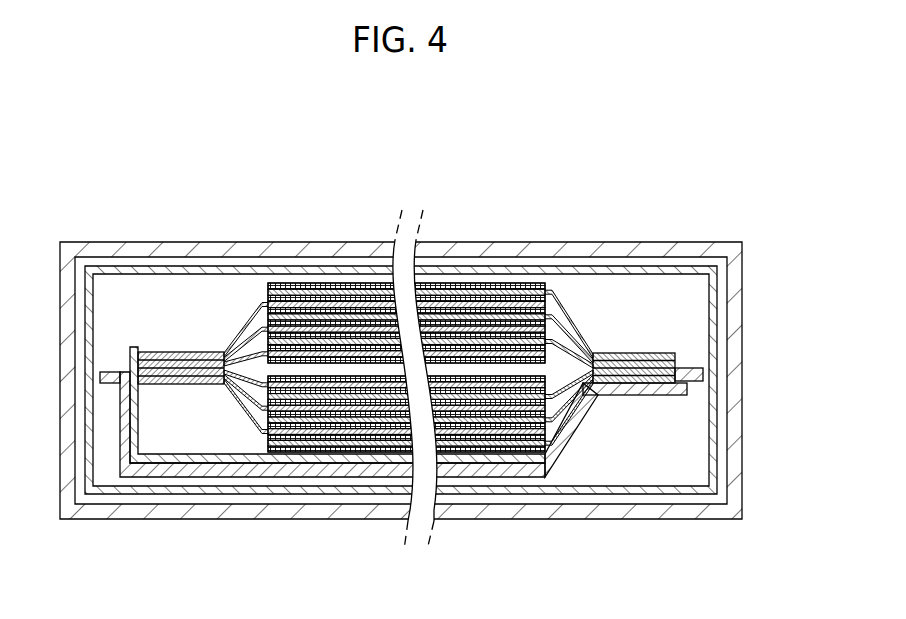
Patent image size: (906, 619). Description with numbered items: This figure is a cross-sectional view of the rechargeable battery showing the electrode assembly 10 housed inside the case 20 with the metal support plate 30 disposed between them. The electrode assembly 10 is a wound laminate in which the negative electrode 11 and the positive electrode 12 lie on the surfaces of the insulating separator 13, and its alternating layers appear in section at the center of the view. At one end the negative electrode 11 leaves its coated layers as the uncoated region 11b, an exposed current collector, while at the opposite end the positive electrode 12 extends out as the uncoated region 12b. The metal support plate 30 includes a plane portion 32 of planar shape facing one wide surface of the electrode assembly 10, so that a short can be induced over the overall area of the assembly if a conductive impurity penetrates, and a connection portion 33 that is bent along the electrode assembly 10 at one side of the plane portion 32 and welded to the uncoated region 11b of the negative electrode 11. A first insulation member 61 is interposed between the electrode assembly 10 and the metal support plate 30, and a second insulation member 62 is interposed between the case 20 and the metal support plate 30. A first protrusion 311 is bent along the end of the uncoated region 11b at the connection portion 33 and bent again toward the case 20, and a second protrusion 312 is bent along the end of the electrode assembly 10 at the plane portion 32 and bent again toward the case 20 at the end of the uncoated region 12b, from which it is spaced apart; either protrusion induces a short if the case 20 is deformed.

The electrode assembly 10 is at (406, 391).
The negative electrode 11 is at (471, 441).
The uncoated region of the negative electrode 11b is at (644, 385).
The positive electrode 12 is at (341, 447).
The uncoated region of the positive electrode 12b is at (170, 386).
The separator 13 is at (492, 440).
The case 20 is at (620, 243).
The metal support plate 30 is at (402, 391).
The plane portion 32 is at (320, 463).
The connection portion 33 is at (666, 396).
The first insulation member 61 is at (217, 478).
The second insulation member 62 is at (108, 492).
The first protrusion 311 is at (693, 368).
The second protrusion 312 is at (110, 372).